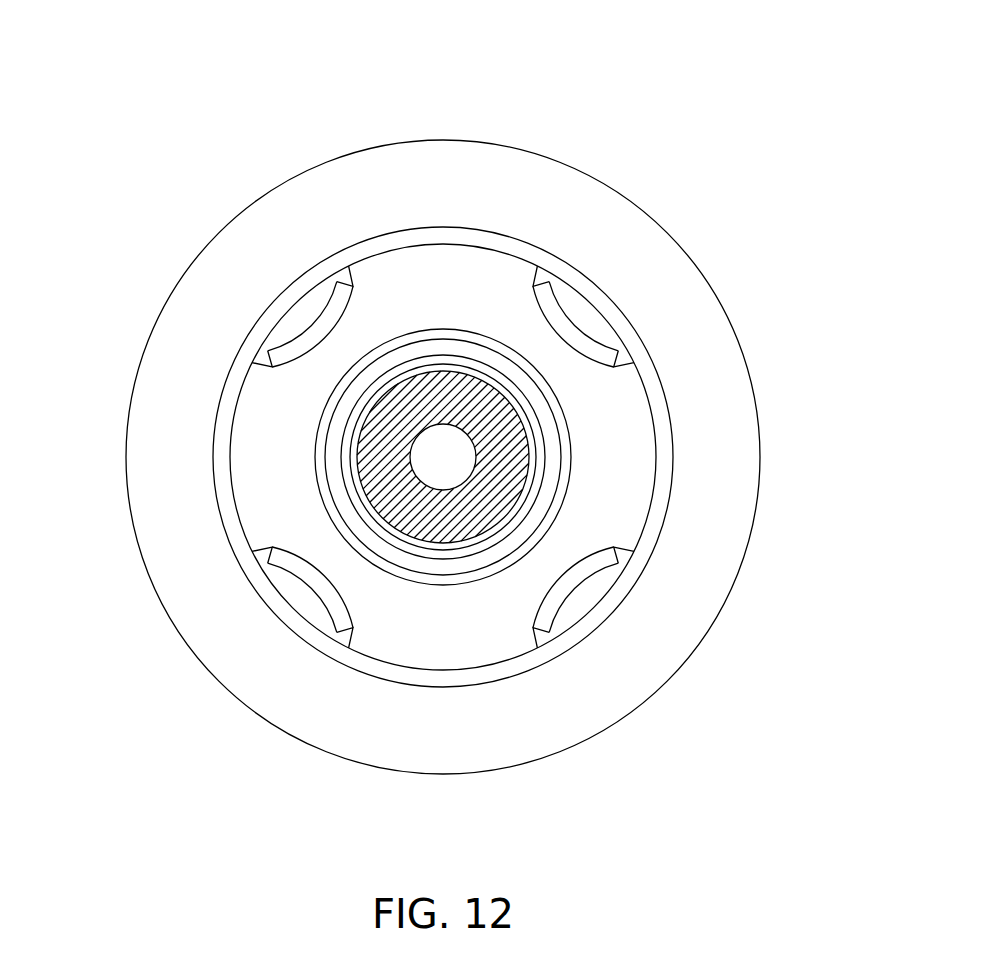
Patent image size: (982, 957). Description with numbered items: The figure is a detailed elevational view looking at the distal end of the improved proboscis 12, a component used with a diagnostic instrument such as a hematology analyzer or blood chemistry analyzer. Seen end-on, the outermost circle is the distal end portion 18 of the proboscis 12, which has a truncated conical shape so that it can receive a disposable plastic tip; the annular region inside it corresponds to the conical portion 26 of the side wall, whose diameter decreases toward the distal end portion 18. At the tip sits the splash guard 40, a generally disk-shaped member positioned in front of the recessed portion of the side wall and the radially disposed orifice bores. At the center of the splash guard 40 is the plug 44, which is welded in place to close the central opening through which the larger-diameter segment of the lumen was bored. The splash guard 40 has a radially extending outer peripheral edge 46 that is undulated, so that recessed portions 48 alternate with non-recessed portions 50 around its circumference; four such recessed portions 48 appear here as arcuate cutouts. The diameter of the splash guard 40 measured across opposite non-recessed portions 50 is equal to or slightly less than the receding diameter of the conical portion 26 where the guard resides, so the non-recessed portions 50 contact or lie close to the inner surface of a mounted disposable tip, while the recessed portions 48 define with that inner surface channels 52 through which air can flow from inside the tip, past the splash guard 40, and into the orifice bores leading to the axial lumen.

The proboscis 12 is at (88, 96).
The distal end portion 18 is at (742, 345).
The conical portion 26 is at (742, 523).
The splash guard 40 is at (423, 243).
The plug 44 is at (417, 525).
The outer peripheral edge 46 is at (520, 255).
The recessed portions 48 is at (585, 340).
The non-recessed portions 50 is at (657, 422).
The channels 52 is at (295, 325).